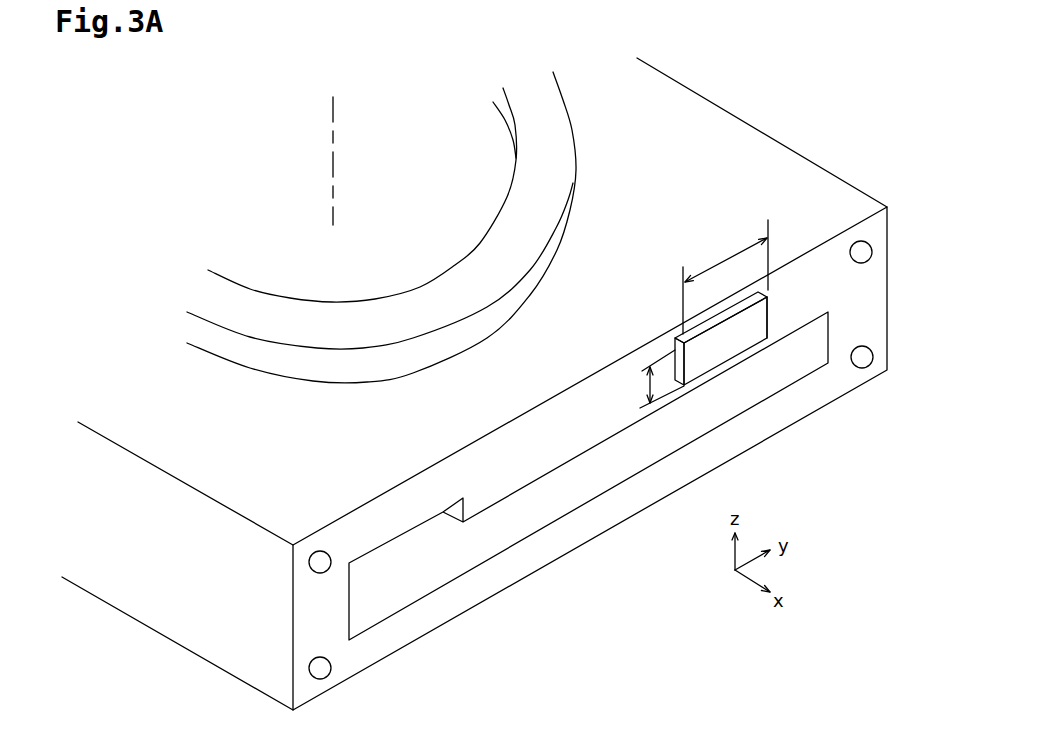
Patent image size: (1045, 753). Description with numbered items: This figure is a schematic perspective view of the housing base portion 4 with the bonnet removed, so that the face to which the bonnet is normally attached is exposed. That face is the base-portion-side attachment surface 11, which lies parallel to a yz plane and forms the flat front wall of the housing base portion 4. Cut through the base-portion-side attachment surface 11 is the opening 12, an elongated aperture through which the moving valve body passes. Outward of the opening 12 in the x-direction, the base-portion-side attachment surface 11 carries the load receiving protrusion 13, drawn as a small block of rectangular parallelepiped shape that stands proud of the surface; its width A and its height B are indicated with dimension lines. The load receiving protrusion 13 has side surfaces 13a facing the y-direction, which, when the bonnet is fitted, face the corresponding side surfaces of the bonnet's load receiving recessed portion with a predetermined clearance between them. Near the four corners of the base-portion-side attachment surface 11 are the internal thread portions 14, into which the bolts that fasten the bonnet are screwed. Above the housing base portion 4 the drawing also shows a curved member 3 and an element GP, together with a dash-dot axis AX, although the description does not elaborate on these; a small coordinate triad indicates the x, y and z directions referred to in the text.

The ring member 3 is at (538, 152).
The housing base portion 4 is at (640, 137).
The base-portion-side attachment surface 11 is at (476, 384).
The opening 12 is at (607, 490).
The load receiving protrusion 13 is at (715, 356).
The side surface 13a is at (680, 362).
The internal thread portion 14 is at (317, 662).
The axis AX is at (333, 120).
The gear plate GP is at (442, 138).
The width of protrusion A is at (725, 277).
The height of protrusion B is at (653, 379).